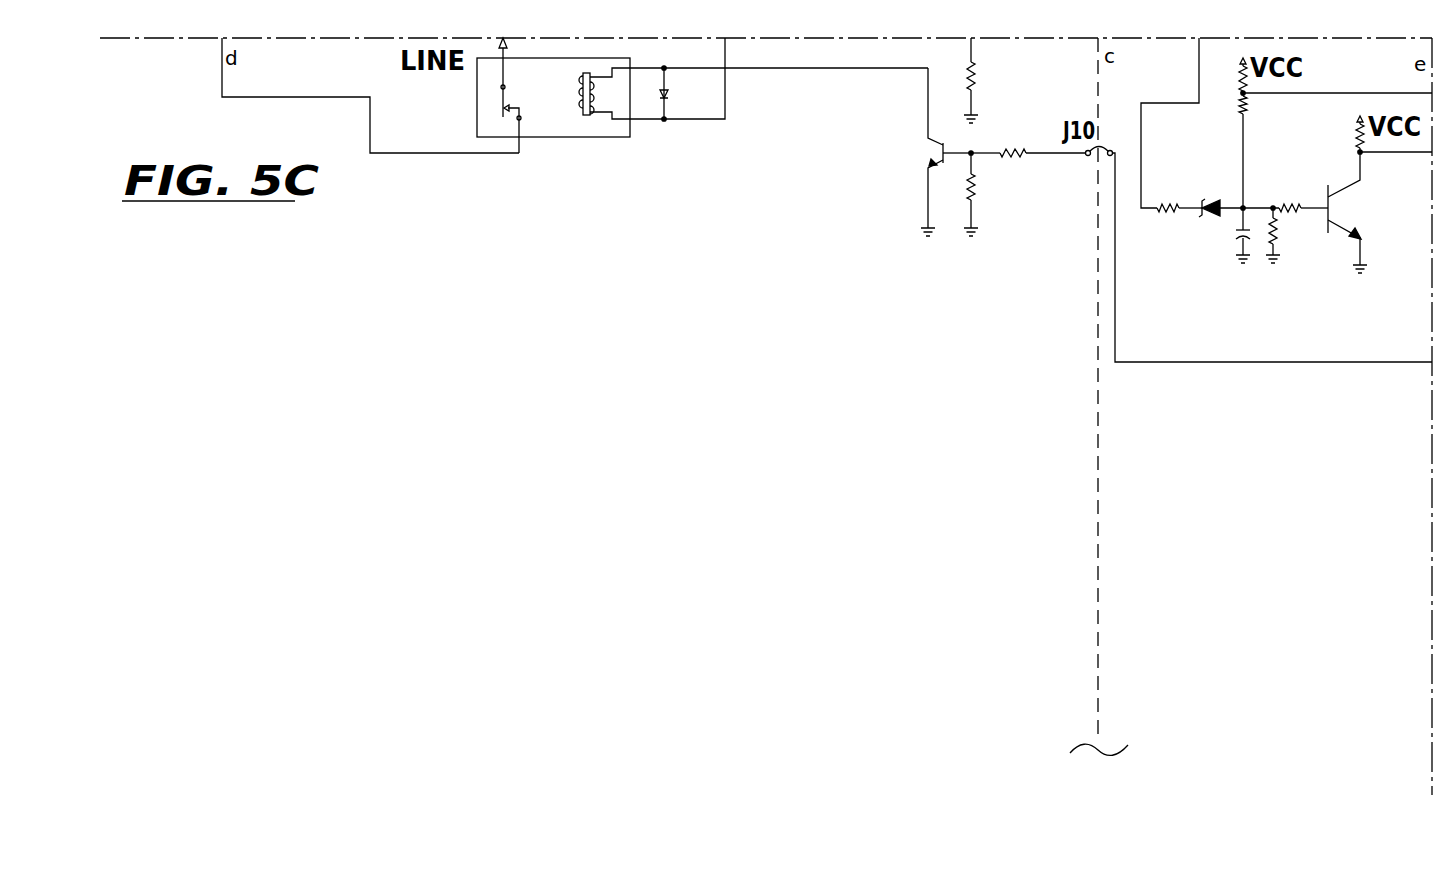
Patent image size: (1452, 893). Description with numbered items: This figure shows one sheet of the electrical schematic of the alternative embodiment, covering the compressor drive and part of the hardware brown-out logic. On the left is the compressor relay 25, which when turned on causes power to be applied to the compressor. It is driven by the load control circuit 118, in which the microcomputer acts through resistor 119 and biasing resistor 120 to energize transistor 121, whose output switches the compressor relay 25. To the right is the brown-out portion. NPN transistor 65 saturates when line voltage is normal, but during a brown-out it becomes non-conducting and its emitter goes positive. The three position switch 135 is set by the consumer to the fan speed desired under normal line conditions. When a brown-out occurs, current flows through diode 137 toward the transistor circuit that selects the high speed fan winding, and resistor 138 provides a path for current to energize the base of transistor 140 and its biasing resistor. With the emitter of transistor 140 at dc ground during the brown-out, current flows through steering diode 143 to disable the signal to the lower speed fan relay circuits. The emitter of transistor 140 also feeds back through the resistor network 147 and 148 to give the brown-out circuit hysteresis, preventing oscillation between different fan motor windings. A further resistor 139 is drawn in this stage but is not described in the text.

The compressor relay 25 is at (549, 140).
The NPN transistor 65 is at (1350, 210).
The load control circuit 118 is at (889, 203).
The resistor 119 is at (1021, 148).
The biasing resistor 120 is at (975, 190).
The transistor 121 is at (928, 148).
The three position switch 135 is at (1163, 216).
The diode 137 is at (1205, 223).
The resistor 138 is at (1250, 250).
The resistor 139 is at (1283, 236).
The transistor 140 is at (1281, 203).
The steering diode 143 is at (1355, 125).
The resistor network 147 is at (1247, 78).
The resistor network 148 is at (1280, 105).